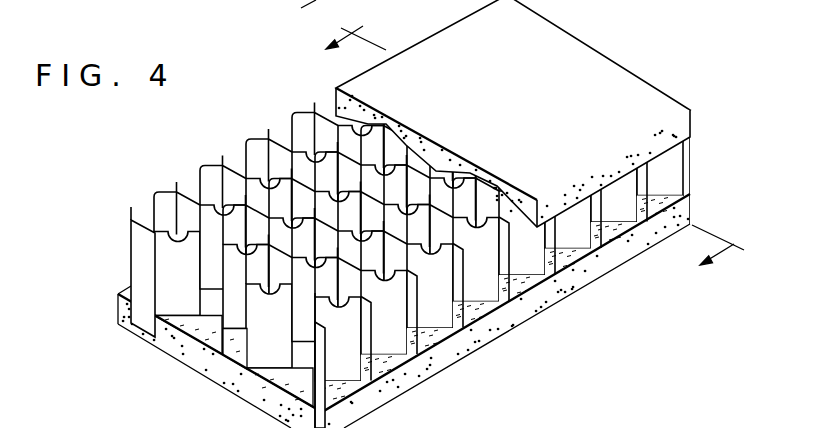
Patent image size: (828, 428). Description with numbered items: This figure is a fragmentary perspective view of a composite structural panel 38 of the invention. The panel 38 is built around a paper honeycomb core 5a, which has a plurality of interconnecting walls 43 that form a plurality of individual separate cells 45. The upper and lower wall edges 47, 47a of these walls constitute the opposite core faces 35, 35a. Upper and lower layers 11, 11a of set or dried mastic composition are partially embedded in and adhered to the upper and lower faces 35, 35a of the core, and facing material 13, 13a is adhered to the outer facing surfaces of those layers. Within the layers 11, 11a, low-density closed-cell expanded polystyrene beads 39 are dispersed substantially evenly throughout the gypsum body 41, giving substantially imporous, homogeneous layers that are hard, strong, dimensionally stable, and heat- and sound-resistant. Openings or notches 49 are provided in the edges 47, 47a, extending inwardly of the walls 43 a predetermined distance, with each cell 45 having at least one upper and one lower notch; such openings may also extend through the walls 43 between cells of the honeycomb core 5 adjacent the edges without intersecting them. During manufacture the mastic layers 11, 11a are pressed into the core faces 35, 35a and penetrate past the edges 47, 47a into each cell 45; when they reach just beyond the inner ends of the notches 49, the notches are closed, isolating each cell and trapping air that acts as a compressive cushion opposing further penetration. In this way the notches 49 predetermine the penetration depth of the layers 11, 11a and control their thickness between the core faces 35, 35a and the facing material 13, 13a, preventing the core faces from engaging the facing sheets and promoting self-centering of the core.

The honeycomb core 5 is at (528, 132).
The paper honeycomb core 5a is at (131, 245).
The upper layer 11 is at (571, 182).
The lower layer 11a is at (511, 317).
The facing material 13 is at (620, 73).
The facing material 13a is at (463, 357).
The upper face of honeycomb core 35 is at (393, 125).
The lower face of honeycomb core 35a is at (230, 384).
The composite structural panel 38 is at (408, 214).
The expanded polystyrene beads 39 is at (668, 118).
The gypsum body 41 is at (688, 129).
The interconnecting walls 43 is at (170, 277).
The cells 45 is at (349, 224).
The upper wall edges 47 is at (361, 268).
The lower wall edges 47a is at (386, 401).
The notches 49 is at (312, 258).